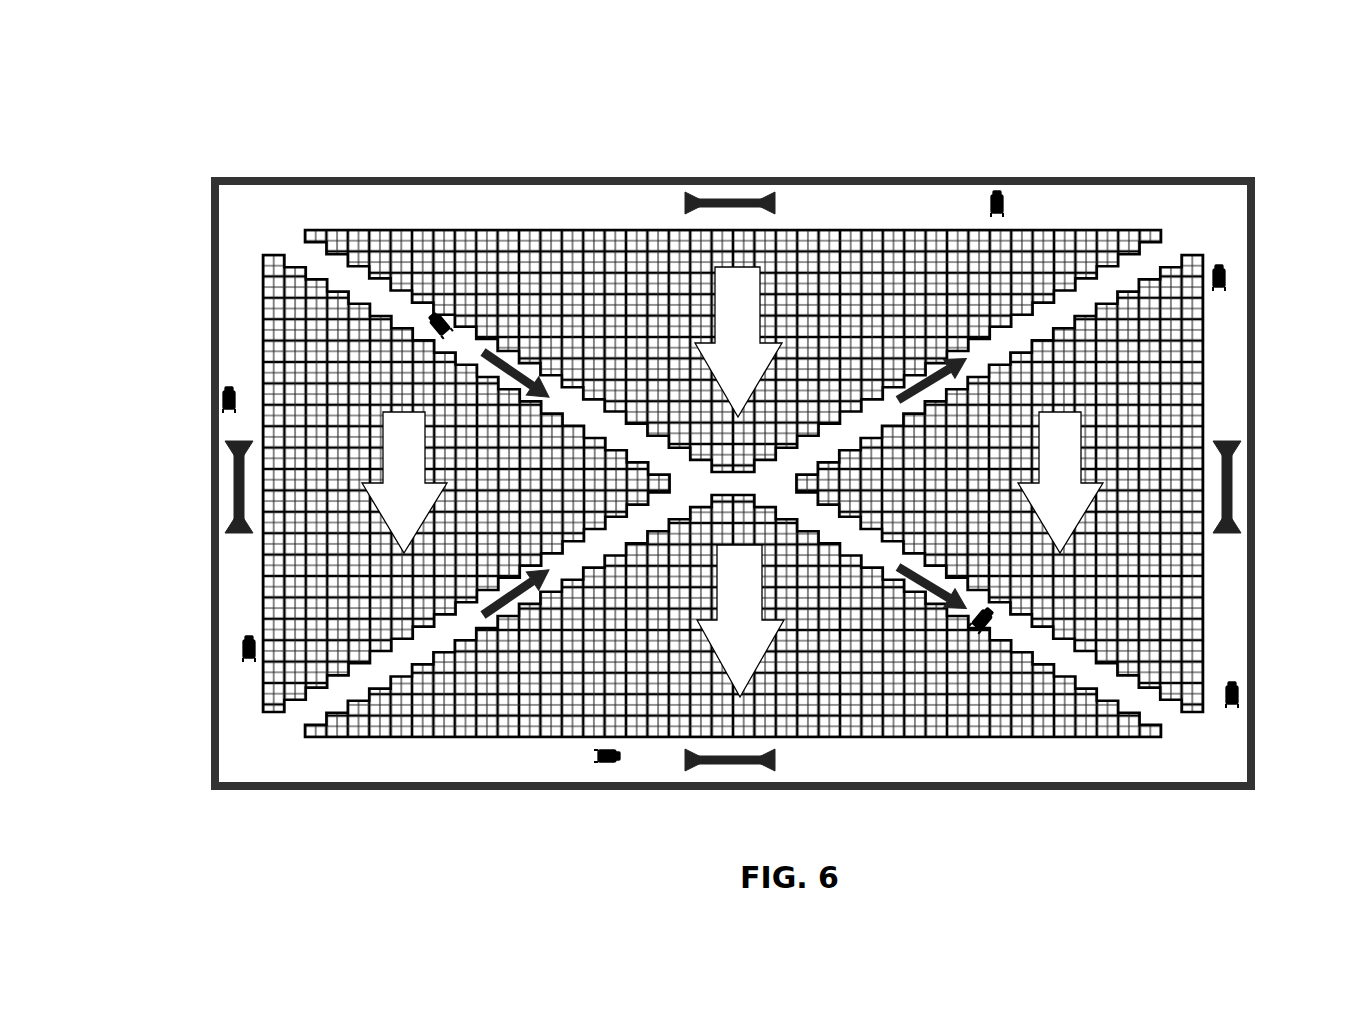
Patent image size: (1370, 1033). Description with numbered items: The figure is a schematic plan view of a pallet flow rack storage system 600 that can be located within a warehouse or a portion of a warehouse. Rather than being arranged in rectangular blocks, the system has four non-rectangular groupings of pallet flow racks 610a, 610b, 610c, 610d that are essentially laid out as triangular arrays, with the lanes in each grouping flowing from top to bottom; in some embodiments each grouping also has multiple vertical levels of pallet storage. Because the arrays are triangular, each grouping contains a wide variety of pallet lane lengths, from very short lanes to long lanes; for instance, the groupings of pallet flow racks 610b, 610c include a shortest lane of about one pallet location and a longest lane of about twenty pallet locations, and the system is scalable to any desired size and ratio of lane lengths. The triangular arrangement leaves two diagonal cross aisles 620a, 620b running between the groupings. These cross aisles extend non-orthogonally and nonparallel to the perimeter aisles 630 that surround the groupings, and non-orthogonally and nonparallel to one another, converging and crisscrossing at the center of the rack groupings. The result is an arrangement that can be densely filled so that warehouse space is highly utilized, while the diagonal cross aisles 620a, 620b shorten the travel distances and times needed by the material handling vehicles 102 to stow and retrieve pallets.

The pallet flow rack storage system 600 is at (317, 98).
The material handling vehicle 102 is at (1012, 203).
The grouping of pallet flow racks 610a is at (265, 675).
The grouping of pallet flow racks 610b is at (470, 737).
The grouping of pallet flow racks 610c is at (895, 228).
The grouping of pallet flow racks 610d is at (1205, 605).
The cross aisle 620a is at (1103, 283).
The cross aisle 620b is at (335, 275).
The perimeter aisle 630 is at (615, 205).